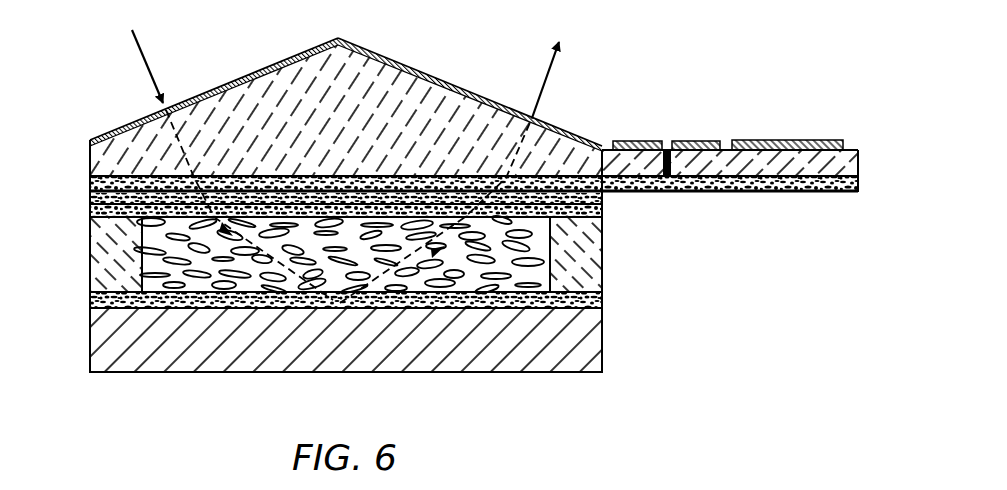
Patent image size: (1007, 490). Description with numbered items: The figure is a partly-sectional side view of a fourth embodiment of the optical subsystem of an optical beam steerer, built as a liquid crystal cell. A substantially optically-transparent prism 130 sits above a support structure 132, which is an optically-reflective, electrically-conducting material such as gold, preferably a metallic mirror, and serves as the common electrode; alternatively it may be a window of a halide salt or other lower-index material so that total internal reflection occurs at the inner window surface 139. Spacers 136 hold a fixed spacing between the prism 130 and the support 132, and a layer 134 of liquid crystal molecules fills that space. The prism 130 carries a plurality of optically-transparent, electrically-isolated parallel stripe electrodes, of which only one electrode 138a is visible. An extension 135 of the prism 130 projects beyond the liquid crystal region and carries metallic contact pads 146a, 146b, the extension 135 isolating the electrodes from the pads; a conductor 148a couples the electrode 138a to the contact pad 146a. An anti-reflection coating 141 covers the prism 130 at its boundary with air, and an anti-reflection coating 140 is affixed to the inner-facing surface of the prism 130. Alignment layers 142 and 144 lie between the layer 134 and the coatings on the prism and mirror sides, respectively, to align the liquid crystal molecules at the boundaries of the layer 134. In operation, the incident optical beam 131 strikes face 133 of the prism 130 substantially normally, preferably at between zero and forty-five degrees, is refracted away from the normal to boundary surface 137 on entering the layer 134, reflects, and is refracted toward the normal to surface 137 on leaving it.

The prism 130 is at (452, 92).
The incident optical beam 131 is at (146, 61).
The support structure 132 is at (595, 333).
The face of prism 133 is at (306, 51).
The layer of liquid crystal molecules 134 is at (487, 275).
The extension 135 is at (853, 170).
The spacers 136 is at (98, 262).
The boundary surface 137 is at (248, 177).
The stripe electrode 138a is at (608, 193).
The inner window surface 139 is at (578, 304).
The anti-reflection coating 140 is at (327, 177).
The anti-reflection coating 141 is at (385, 58).
The alignment layer 142 is at (300, 217).
The alignment layer 144 is at (262, 287).
The contact pad 146a is at (650, 108).
The contact pad 146b is at (793, 139).
The conductor 148a is at (687, 141).